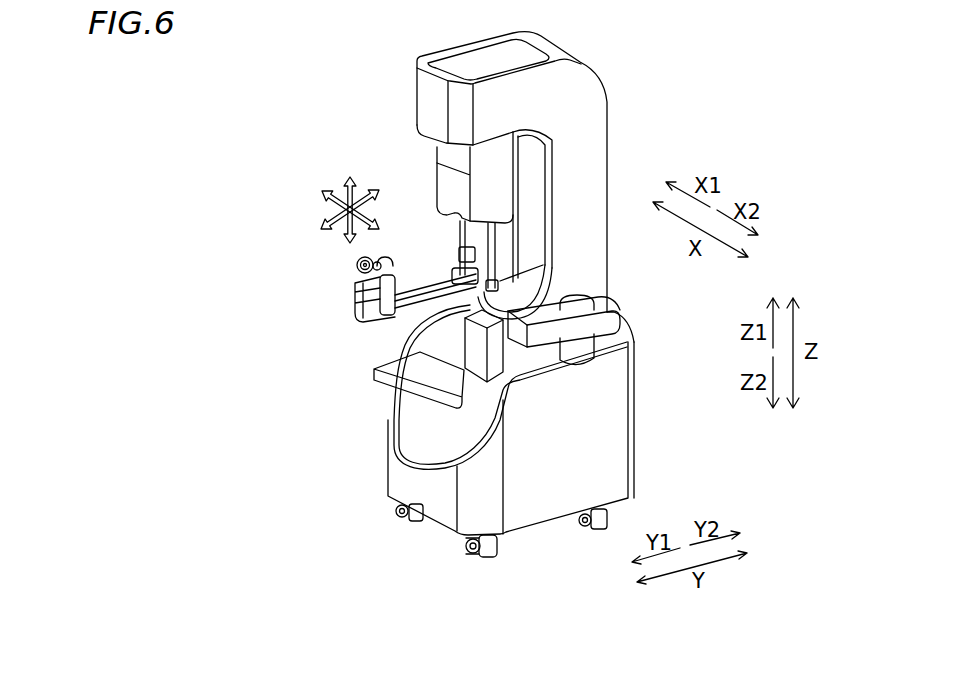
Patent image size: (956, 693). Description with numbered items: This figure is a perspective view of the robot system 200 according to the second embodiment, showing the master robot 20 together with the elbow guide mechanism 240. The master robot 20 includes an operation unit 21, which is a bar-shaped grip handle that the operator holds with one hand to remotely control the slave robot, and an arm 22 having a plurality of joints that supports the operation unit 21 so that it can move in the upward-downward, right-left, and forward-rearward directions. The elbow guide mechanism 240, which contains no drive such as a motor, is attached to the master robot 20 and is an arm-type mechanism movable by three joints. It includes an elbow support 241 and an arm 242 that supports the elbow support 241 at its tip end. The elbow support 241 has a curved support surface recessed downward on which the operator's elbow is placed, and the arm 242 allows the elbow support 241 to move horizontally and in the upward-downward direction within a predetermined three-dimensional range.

The robot system 200 is at (470, 281).
The master robot 20 is at (608, 59).
The arm 22 is at (426, 286).
The operation unit 21 is at (348, 259).
The elbow guide mechanism 240 is at (362, 364).
The elbow support 241 is at (417, 400).
The arm 242 is at (573, 381).